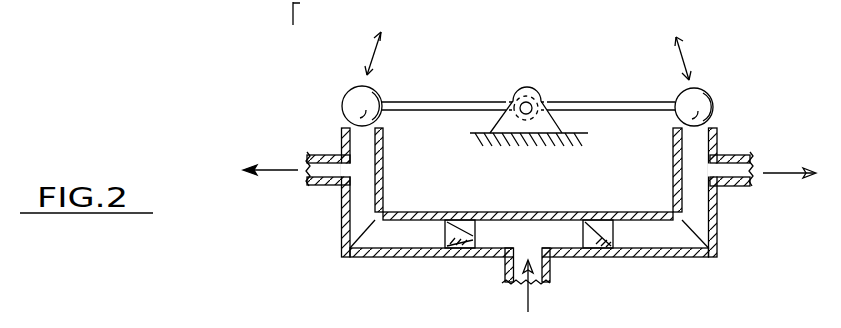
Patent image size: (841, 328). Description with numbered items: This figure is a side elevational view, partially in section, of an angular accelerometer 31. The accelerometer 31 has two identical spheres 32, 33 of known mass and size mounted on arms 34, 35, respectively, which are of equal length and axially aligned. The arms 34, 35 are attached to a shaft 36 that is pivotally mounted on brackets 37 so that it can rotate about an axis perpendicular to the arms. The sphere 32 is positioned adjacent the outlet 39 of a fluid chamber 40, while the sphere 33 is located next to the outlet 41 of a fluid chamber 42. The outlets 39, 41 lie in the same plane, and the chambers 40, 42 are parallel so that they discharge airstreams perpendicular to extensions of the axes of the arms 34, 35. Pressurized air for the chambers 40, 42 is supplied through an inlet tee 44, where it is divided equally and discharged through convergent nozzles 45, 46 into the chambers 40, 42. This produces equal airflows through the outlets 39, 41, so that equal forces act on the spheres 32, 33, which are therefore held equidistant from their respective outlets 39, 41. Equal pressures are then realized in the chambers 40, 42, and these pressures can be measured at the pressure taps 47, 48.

The accelerometer 31 is at (704, 53).
The sphere 32 is at (352, 100).
The sphere 33 is at (707, 97).
The arm 34 is at (440, 100).
The arm 35 is at (605, 104).
The shaft 36 is at (525, 104).
The brackets 37 is at (497, 121).
The outlet 39 is at (346, 128).
The fluid chamber 40 is at (363, 217).
The outlet 41 is at (707, 133).
The fluid chamber 42 is at (698, 220).
The inlet tee 44 is at (552, 280).
The convergent nozzle 45 is at (462, 232).
The convergent nozzle 46 is at (597, 237).
The pressure tap 47 is at (305, 170).
The pressure tap 48 is at (742, 176).